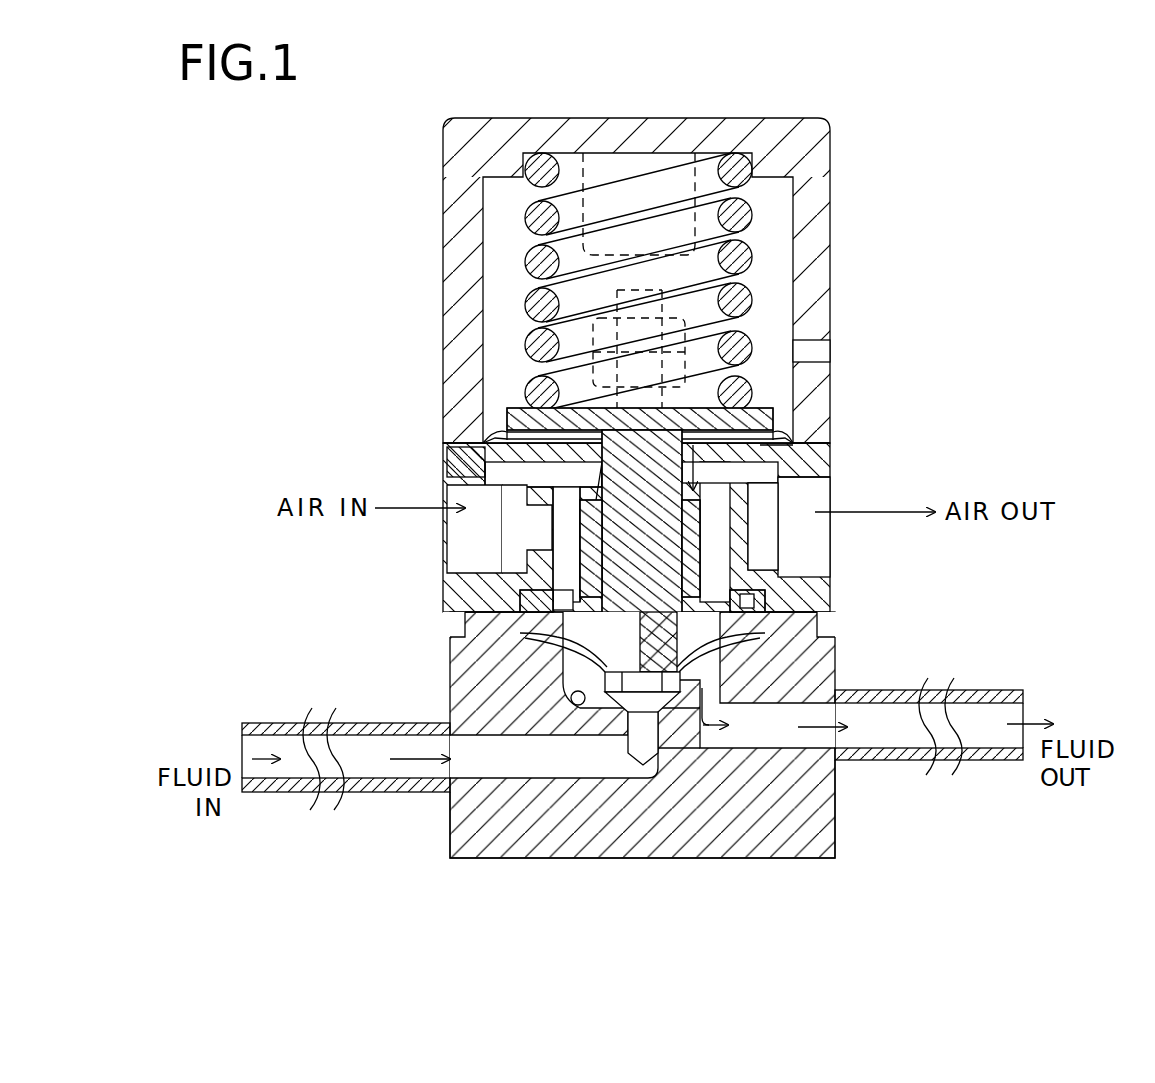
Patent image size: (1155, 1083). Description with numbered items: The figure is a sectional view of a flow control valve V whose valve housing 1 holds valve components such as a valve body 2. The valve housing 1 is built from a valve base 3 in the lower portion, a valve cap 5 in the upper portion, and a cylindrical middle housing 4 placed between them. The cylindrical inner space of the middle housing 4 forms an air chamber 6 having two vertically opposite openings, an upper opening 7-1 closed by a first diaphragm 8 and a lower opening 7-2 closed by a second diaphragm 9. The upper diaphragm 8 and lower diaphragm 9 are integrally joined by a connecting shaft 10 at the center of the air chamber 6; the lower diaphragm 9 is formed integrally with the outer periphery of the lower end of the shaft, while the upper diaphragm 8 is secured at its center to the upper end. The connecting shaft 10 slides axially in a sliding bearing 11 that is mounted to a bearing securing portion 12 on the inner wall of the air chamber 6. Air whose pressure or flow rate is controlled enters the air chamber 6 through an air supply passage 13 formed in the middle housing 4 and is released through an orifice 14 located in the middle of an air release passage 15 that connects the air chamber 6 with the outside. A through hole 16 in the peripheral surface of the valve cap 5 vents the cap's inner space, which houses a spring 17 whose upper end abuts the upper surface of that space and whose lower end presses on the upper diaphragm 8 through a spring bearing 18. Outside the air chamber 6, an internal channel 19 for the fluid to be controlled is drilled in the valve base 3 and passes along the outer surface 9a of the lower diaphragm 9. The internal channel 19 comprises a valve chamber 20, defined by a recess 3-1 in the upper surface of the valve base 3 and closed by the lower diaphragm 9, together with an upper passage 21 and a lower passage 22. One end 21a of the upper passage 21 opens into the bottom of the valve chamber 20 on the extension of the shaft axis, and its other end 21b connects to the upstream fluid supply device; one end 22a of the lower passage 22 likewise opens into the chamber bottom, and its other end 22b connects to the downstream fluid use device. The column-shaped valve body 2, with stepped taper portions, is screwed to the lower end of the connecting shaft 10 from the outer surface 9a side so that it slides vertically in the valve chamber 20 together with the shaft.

The flow control valve V is at (850, 130).
The valve housing 1 is at (833, 305).
The valve body 2 is at (735, 690).
The valve base 3 is at (838, 830).
The recess 3-1 is at (580, 712).
The middle housing 4 is at (833, 456).
The valve cap 5 is at (800, 410).
The air chamber 6 is at (763, 450).
The upper opening 7-1 is at (455, 462).
The lower opening 7-2 is at (470, 625).
The first diaphragm 8 is at (503, 420).
The second diaphragm 9 is at (545, 660).
The outer surface of the lower diaphragm 9a is at (760, 645).
The connecting shaft 10 is at (655, 573).
The sliding bearing 11 is at (795, 503).
The bearing securing portion 12 is at (660, 388).
The air supply passage 13 is at (470, 525).
The orifice 14 is at (740, 543).
The air release passage 15 is at (820, 488).
The through hole 16 is at (830, 346).
The spring 17 is at (525, 335).
The spring bearing 18 is at (515, 410).
The internal channel 19 is at (632, 772).
The valve chamber 20 is at (563, 690).
The upper passage 21 is at (490, 762).
The one end of the upper passage 21a is at (600, 725).
The other end of the upper passage 21b is at (340, 768).
The lower passage 22 is at (815, 740).
The one end of the lower passage 22a is at (697, 712).
The other end of the lower passage 22b is at (920, 765).